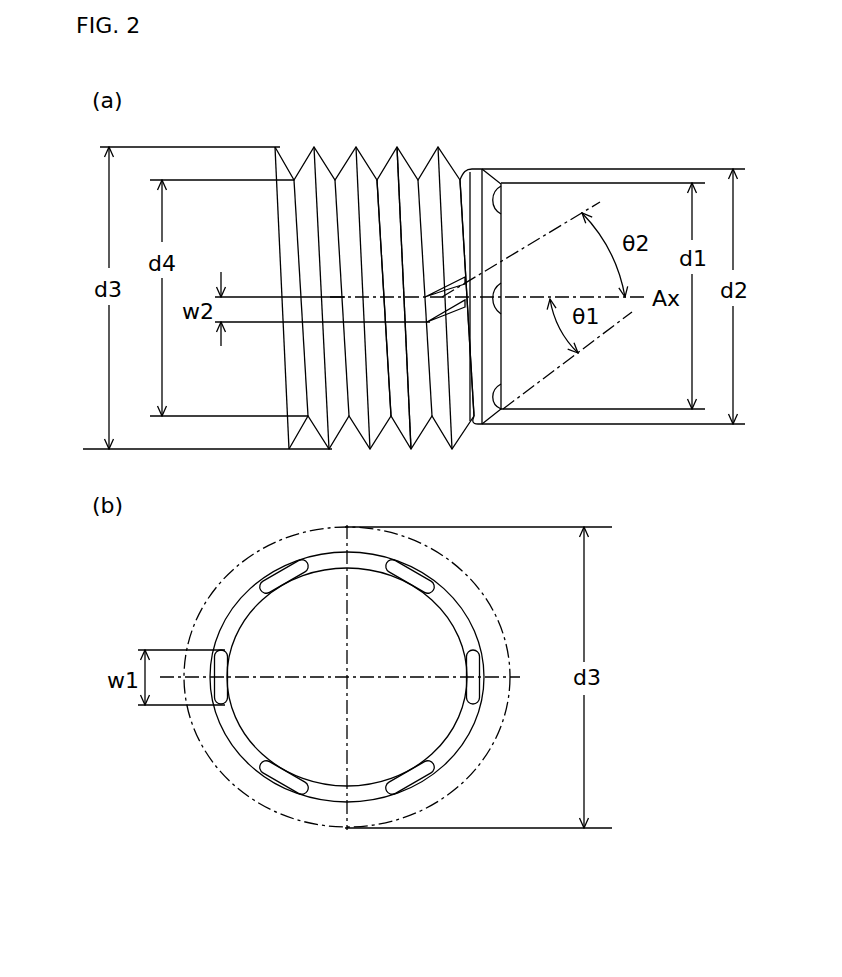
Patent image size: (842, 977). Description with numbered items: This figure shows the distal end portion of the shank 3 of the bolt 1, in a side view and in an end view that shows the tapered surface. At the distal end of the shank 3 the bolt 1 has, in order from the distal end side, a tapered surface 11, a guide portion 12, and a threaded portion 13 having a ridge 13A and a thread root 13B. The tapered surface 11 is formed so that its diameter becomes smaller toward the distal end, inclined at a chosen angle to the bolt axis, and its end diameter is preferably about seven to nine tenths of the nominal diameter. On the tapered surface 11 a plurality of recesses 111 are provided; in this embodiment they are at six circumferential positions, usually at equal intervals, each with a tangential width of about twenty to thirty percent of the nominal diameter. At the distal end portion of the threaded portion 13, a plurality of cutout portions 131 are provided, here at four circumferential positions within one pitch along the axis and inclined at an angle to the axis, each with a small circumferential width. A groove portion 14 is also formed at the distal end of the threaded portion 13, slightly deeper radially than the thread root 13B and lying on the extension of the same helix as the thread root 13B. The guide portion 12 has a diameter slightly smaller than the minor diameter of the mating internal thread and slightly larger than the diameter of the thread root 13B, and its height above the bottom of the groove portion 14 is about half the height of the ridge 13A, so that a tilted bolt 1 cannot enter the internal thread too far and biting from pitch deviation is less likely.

The bolt 1 is at (212, 562).
The shank 3 is at (496, 71).
The tapered surface 11 is at (495, 227).
The guide portion 12 is at (473, 170).
The threaded portion 13 is at (430, 97).
The ridge 13A is at (396, 168).
The thread root 13B is at (376, 178).
The groove portion 14 is at (463, 176).
The recess 111 is at (500, 305).
The cutout portion 131 is at (466, 279).